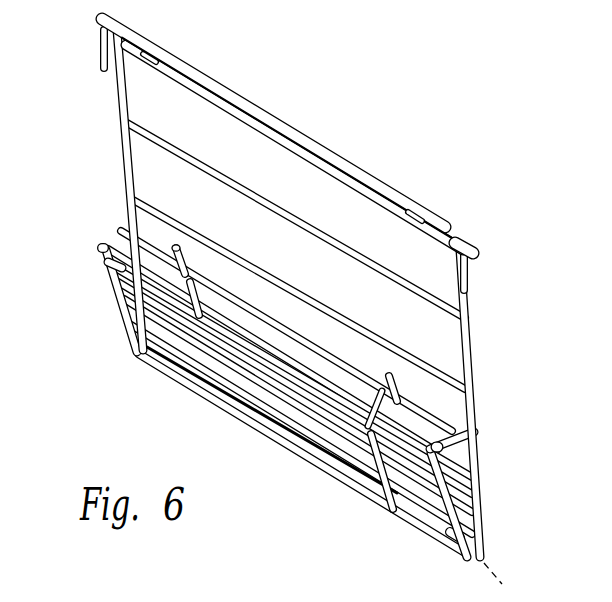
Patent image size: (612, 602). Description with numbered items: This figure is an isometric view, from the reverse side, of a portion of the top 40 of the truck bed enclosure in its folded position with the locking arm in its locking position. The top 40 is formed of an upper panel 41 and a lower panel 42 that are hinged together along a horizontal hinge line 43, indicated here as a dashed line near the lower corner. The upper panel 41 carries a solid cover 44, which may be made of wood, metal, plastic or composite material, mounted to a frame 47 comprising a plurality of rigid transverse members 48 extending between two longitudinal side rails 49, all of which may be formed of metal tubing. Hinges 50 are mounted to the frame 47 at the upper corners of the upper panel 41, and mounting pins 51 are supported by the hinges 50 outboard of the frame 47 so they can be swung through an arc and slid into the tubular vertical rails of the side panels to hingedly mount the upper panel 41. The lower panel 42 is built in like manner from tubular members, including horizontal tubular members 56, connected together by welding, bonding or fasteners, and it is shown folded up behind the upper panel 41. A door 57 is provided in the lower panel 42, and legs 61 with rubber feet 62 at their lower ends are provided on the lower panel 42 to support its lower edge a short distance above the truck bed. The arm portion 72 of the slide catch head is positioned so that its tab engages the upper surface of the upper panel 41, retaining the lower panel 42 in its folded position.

The top 40 is at (299, 292).
The upper panel 41 is at (299, 278).
The lower panel 42 is at (305, 373).
The horizontal hinge line 43 is at (507, 573).
The solid cover 44 is at (296, 256).
The frame 47 is at (285, 293).
The transverse members 48 is at (232, 102).
The longitudinal side rails 49 is at (122, 98).
The hinges 50 is at (127, 32).
The mounting pins 51 is at (99, 62).
The horizontal tubular members 56 is at (156, 248).
The door 57 is at (437, 490).
The legs 61 is at (181, 252).
The rubber feet 62 is at (177, 246).
The arm portion 72 is at (480, 430).